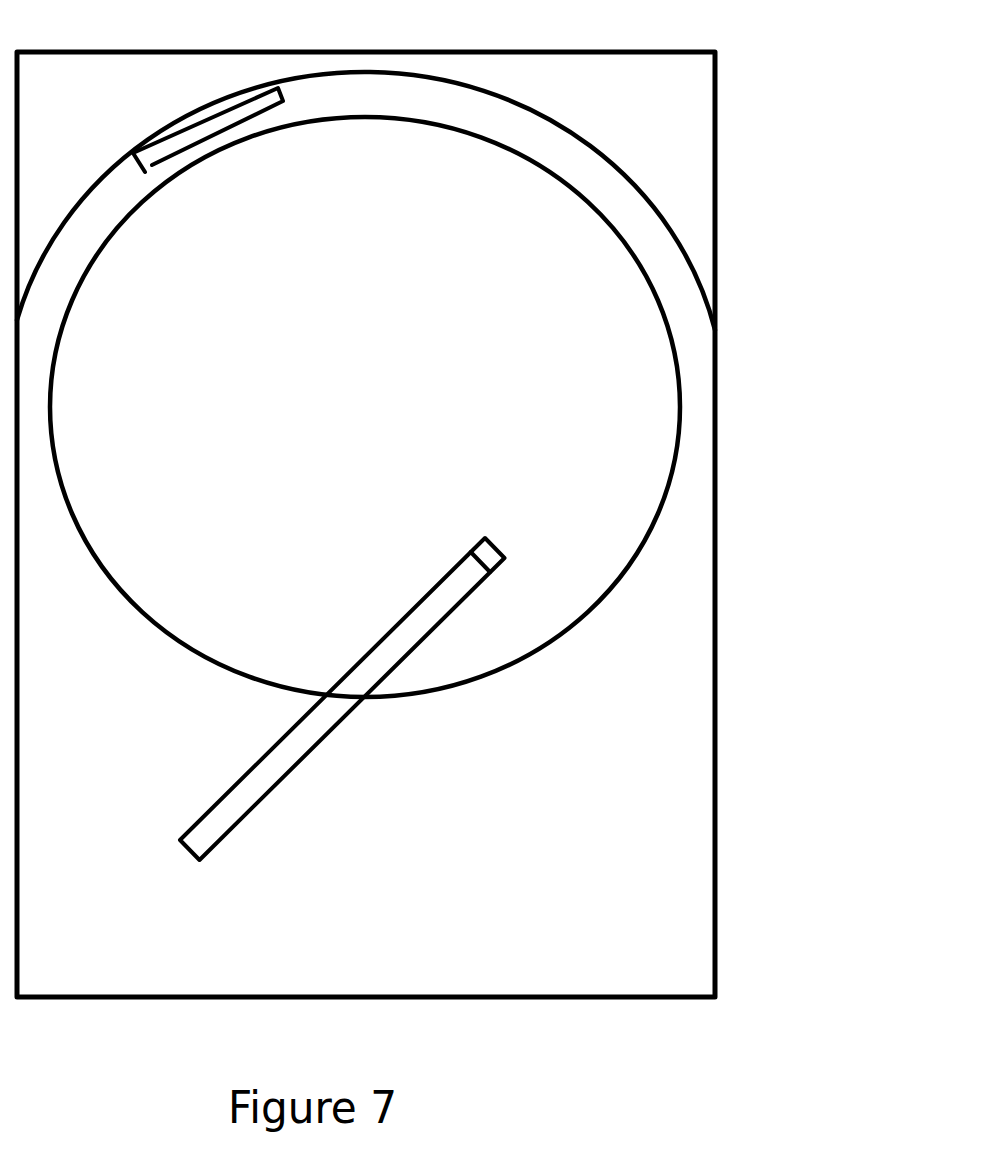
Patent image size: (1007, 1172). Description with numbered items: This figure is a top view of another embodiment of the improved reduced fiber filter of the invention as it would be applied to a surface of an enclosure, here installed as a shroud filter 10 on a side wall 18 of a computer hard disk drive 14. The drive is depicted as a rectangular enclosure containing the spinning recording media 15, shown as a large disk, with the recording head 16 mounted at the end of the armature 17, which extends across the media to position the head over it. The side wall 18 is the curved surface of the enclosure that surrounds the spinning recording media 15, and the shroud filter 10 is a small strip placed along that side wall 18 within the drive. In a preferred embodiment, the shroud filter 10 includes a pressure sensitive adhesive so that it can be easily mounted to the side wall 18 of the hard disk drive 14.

The shroud filter 10 is at (182, 116).
The computer hard disk drive 14 is at (677, 767).
The spinning recording media 15 is at (618, 387).
The recording head 16 is at (504, 559).
The armature 17 is at (320, 742).
The side wall 18 is at (643, 187).